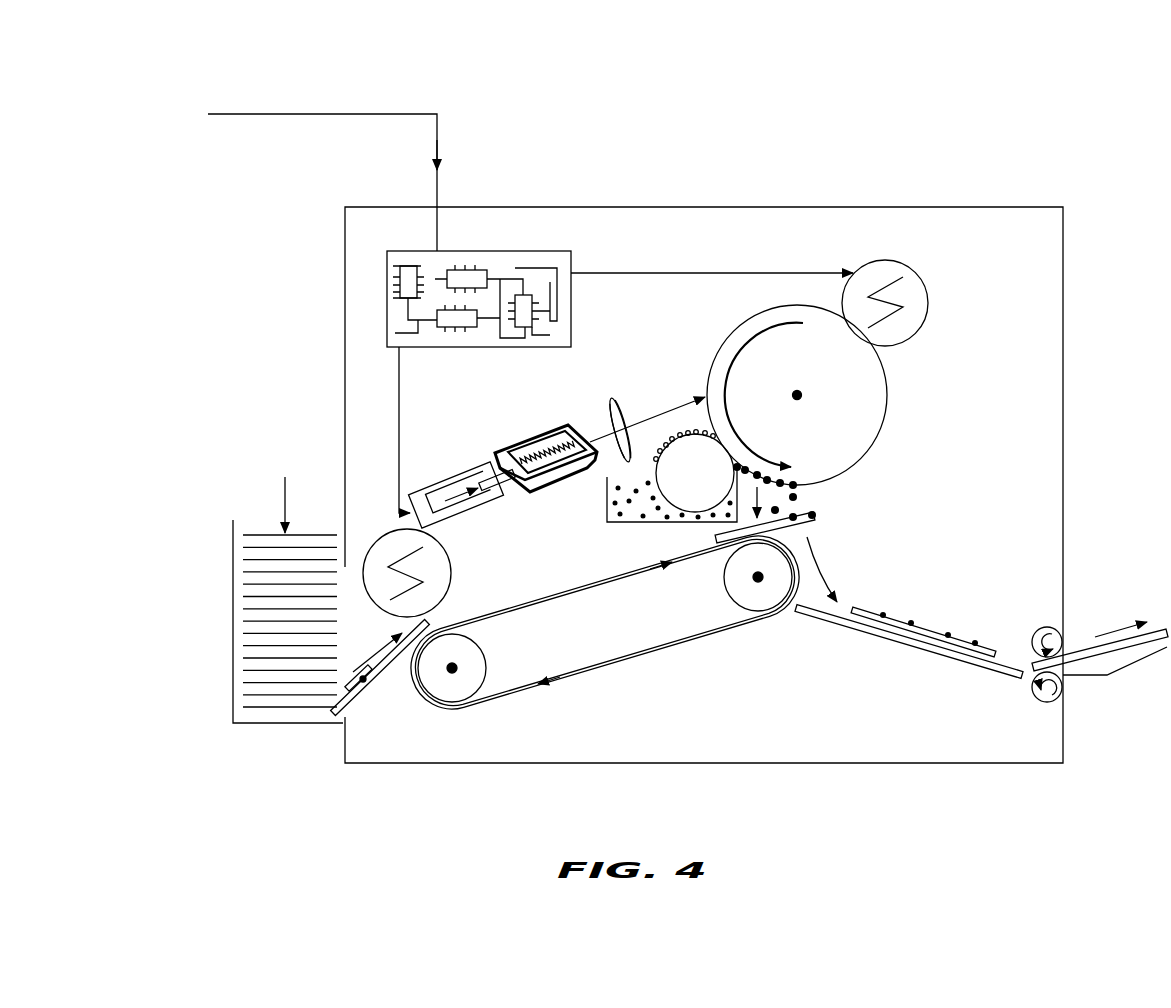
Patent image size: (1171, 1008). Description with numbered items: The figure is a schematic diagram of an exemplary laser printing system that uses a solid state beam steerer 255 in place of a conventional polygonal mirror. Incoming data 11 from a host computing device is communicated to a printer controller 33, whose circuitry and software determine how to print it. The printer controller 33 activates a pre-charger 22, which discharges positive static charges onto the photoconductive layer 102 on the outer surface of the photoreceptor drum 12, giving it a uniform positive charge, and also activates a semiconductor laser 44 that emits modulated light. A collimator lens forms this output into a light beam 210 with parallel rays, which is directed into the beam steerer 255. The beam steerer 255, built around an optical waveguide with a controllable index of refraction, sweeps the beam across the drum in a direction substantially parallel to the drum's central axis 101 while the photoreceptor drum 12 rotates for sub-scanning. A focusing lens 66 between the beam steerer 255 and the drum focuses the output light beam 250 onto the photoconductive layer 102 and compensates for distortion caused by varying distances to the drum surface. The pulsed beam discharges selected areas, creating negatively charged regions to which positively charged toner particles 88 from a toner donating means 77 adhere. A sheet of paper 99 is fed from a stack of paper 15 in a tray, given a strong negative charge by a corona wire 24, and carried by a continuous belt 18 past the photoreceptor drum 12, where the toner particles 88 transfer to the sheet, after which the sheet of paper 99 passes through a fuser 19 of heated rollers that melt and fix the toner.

The incoming data 11 is at (305, 114).
The printer controller 33 is at (499, 269).
The pre-charger 22 is at (880, 277).
The photoreceptor drum 12 is at (873, 418).
The photoconductive layer 102 is at (713, 358).
The central axis 101 is at (799, 391).
The focusing lens 66 is at (612, 400).
The output light beam 250 is at (608, 424).
The beam steerer 255 is at (526, 444).
The laser 44 is at (433, 486).
The light beam 210 is at (486, 490).
The corona wire 24 is at (373, 548).
The toner donating means 77 is at (652, 488).
The toner particles 88 is at (812, 498).
The sheet of paper 99 is at (373, 680).
The continuous belt 18 is at (689, 658).
The stack of paper 15 is at (262, 590).
The fuser 19 is at (1040, 620).